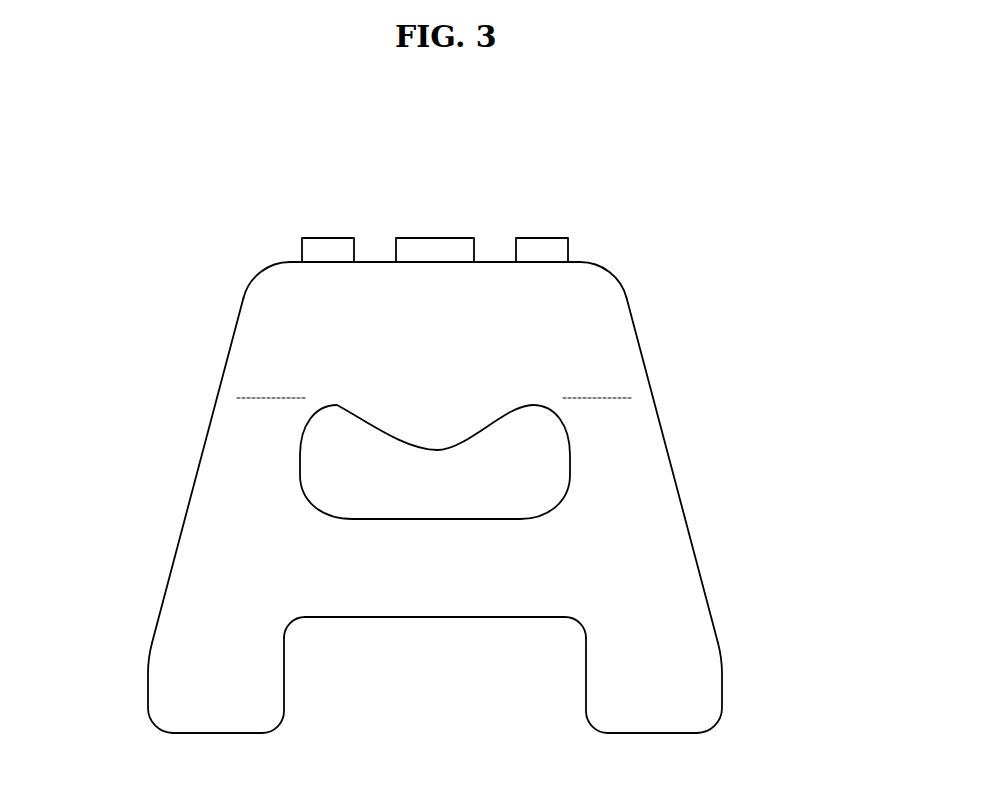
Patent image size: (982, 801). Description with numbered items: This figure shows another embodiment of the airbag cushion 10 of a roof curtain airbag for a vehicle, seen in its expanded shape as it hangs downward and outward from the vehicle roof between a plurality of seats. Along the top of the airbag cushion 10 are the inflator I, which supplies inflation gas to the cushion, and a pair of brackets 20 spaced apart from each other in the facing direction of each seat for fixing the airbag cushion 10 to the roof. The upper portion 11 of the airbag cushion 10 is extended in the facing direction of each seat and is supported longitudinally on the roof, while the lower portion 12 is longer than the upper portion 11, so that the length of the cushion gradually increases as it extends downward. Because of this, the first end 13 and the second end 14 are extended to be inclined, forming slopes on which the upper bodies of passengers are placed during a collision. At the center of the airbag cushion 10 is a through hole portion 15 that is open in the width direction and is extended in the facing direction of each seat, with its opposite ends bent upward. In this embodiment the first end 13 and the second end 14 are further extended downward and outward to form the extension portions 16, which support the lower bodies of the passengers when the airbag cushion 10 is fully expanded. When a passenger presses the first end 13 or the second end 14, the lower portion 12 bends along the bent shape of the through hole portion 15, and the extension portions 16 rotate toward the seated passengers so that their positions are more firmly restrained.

The airbag cushion 10 is at (437, 429).
The upper portion 11 is at (384, 310).
The lower portion 12 is at (402, 587).
The first end 13 is at (193, 475).
The second end 14 is at (670, 450).
The through hole portion 15 is at (462, 519).
The extension portions 16 is at (173, 678).
The brackets 20 is at (328, 244).
The inflator I is at (448, 244).